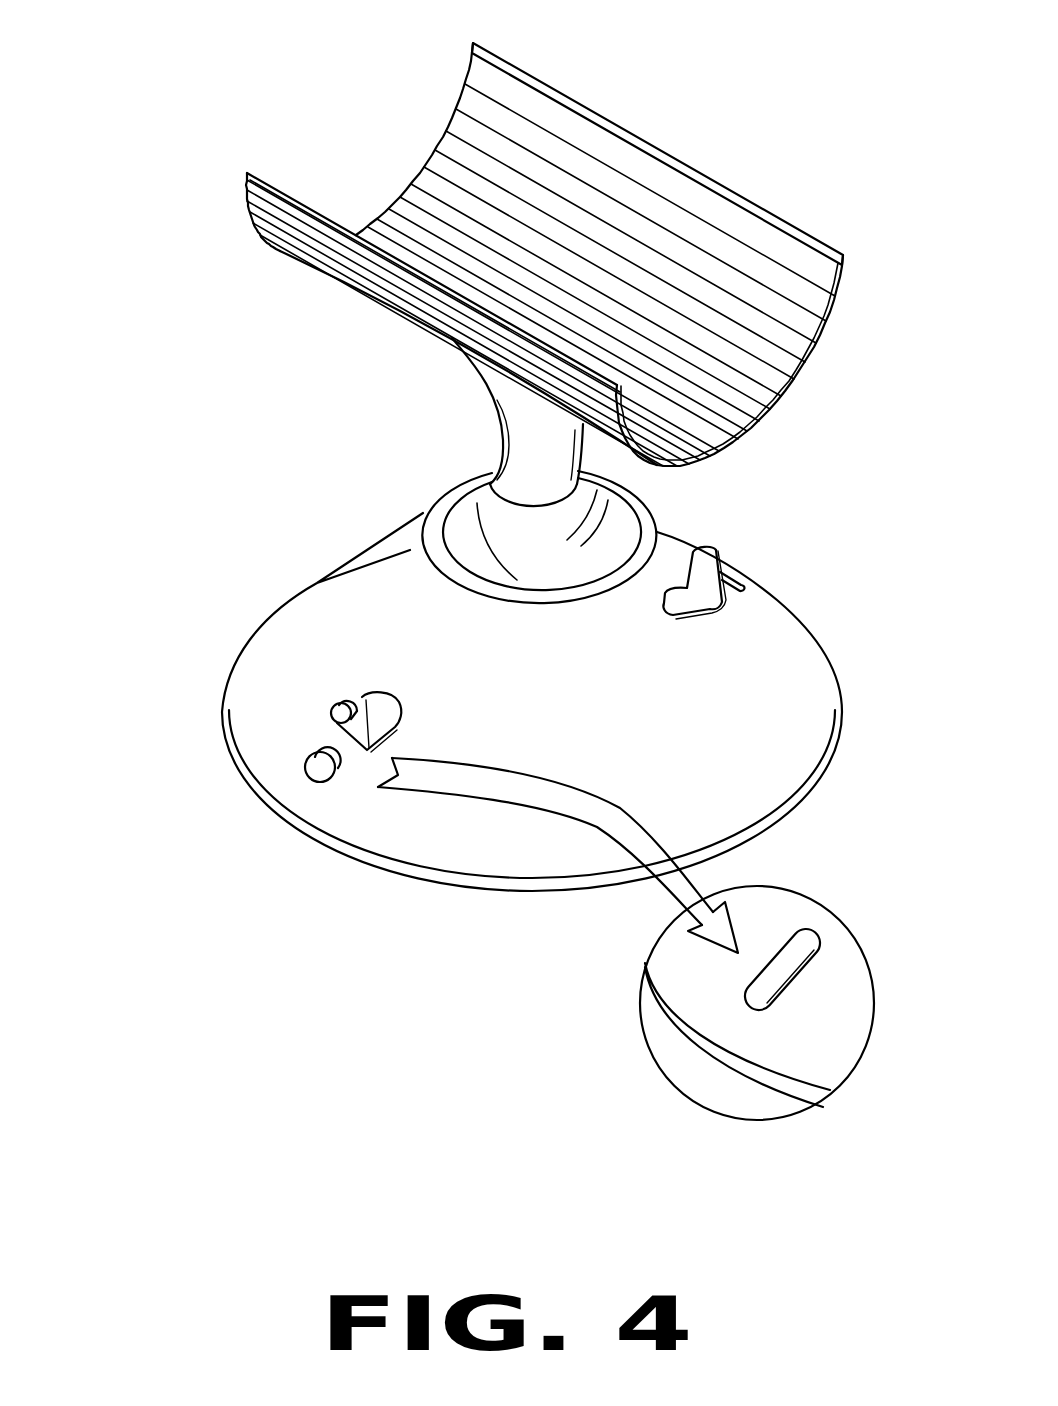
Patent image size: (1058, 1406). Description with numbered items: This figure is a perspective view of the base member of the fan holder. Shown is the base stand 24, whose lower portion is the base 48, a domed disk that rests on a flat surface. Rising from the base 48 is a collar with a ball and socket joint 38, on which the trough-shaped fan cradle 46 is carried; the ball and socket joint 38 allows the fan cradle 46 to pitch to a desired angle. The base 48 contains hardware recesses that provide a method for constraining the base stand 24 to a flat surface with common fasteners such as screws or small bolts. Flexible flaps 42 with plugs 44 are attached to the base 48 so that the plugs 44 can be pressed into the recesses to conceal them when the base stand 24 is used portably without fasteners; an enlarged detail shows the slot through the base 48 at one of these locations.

The base stand 24 is at (797, 187).
The ball and socket joint 38 is at (466, 504).
The flexible flaps 42 is at (343, 692).
The plugs 44 is at (337, 715).
The fan cradle 46 is at (413, 220).
The base 48 is at (315, 807).